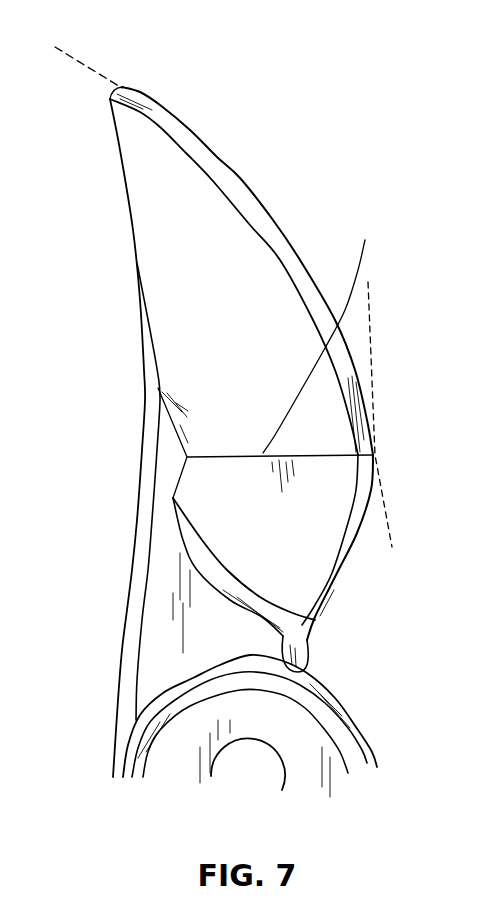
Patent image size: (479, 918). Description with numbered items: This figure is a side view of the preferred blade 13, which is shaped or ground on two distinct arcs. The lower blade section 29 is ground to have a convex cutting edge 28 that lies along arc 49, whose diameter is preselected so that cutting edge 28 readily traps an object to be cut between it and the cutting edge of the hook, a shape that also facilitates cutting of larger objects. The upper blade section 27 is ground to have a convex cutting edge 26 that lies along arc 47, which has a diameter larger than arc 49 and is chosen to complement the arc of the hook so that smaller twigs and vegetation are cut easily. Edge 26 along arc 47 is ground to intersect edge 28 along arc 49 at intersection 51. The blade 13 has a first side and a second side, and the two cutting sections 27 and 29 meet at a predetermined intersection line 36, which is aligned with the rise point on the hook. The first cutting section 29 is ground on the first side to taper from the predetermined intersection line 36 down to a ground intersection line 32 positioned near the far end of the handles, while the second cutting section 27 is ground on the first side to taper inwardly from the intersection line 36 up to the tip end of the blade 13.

The blade 13 is at (125, 181).
The convex cutting edge 26 is at (273, 220).
The blade section 27 is at (203, 195).
The convex cutting edge 28 is at (348, 533).
The blade section 29 is at (320, 528).
The ground intersection line 32 is at (298, 630).
The predetermined intersection line 36 is at (365, 240).
The arc 47 is at (103, 73).
The arc 49 is at (380, 362).
The intersection 51 is at (375, 455).